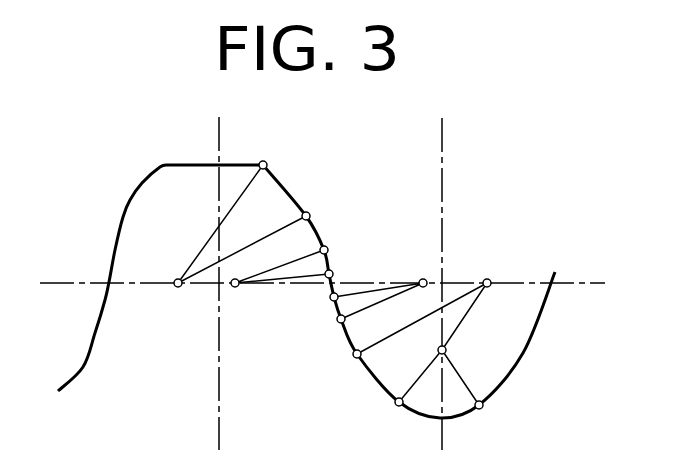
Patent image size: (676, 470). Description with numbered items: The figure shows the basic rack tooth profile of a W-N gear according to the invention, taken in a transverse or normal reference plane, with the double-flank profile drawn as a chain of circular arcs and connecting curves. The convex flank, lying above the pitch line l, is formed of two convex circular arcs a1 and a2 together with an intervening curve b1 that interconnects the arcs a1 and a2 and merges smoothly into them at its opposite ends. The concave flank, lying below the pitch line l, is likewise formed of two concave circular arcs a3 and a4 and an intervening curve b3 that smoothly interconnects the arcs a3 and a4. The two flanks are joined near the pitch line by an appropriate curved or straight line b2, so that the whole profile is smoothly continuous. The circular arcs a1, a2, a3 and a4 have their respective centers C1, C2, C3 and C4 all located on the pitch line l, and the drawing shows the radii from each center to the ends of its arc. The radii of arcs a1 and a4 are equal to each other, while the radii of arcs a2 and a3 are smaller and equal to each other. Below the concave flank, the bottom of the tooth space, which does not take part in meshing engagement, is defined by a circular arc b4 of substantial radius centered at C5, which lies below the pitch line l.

The convex circular arc a1 is at (291, 190).
The intervening curve b1 is at (325, 232).
The convex circular arc a2 is at (341, 256).
The curved or straight line b2 is at (347, 281).
The concave circular arc a3 is at (322, 302).
The intervening curve b3 is at (337, 339).
The concave circular arc a4 is at (372, 378).
The circular arc of tooth space bottom b4 is at (439, 402).
The center of circular arc a1 C1 is at (177, 296).
The center of circular arc a2 C2 is at (240, 296).
The center of circular arc a3 C3 is at (423, 268).
The center of circular arc a4 C4 is at (486, 268).
The center of circular arc b4 C5 is at (459, 350).
The pitch line l is at (580, 283).